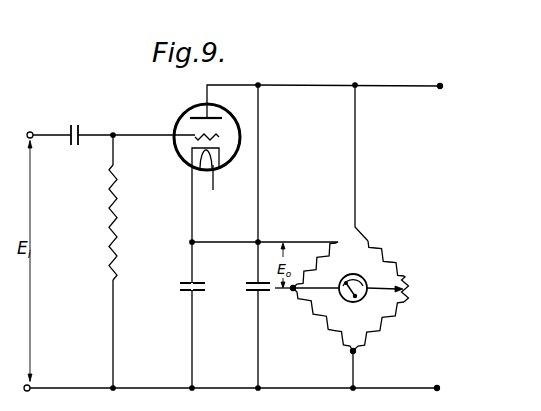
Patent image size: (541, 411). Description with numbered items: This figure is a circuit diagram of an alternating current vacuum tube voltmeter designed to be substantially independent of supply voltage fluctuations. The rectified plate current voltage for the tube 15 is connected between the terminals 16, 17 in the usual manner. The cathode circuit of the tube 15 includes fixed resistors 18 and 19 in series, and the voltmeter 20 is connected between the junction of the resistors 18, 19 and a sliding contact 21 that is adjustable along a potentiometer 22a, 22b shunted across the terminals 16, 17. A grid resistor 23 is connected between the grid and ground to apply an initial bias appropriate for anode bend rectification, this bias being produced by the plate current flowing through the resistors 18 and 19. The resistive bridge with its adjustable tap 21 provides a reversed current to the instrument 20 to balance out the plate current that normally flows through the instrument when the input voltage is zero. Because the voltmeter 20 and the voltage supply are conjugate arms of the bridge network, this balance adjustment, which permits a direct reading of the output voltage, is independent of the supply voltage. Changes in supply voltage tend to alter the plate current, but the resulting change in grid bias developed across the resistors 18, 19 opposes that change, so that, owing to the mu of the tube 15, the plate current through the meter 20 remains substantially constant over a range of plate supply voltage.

The tube 15 is at (180, 115).
The terminal 16 is at (455, 74).
The terminal 17 is at (437, 388).
The fixed resistor 18 is at (315, 258).
The fixed resistor 19 is at (328, 327).
The voltmeter 20 is at (369, 275).
The sliding contact 21 is at (410, 281).
The potentiometer 22a is at (384, 253).
The potentiometer 22b is at (386, 322).
The grid resistor 23 is at (117, 222).